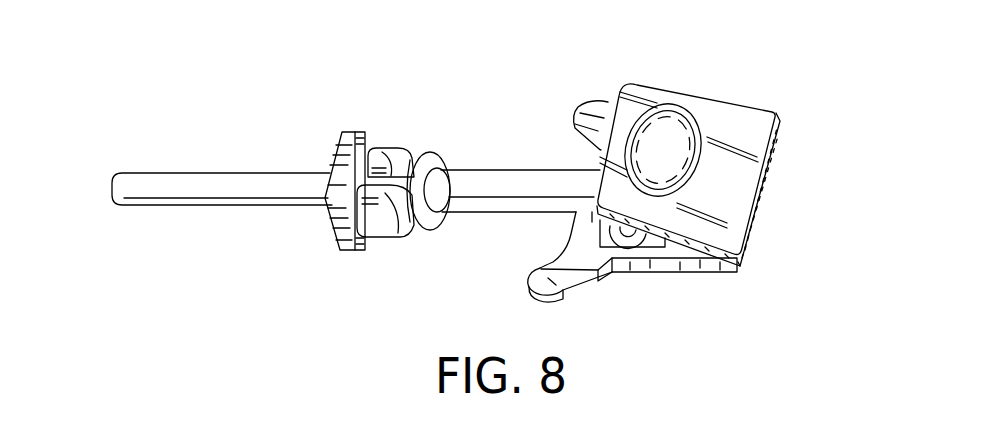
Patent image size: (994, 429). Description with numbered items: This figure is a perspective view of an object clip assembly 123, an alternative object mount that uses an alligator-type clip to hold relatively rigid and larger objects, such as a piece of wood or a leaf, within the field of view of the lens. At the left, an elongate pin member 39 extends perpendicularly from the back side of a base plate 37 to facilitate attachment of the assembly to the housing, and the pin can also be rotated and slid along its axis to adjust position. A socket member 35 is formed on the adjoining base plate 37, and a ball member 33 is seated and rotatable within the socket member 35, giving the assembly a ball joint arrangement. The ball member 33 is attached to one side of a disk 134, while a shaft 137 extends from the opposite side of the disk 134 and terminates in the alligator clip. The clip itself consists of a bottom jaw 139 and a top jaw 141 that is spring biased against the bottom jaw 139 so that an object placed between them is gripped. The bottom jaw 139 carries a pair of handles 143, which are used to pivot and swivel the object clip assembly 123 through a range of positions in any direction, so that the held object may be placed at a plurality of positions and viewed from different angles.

The object clip assembly 123 is at (826, 82).
The pin member 39 is at (278, 183).
The base plate 37 is at (340, 232).
The ball member 33 is at (382, 165).
The socket member 35 is at (390, 228).
The disk 134 is at (437, 220).
The shaft 137 is at (517, 183).
The top jaw 141 is at (747, 128).
The handles 143 is at (591, 108).
The bottom jaw 139 is at (683, 250).